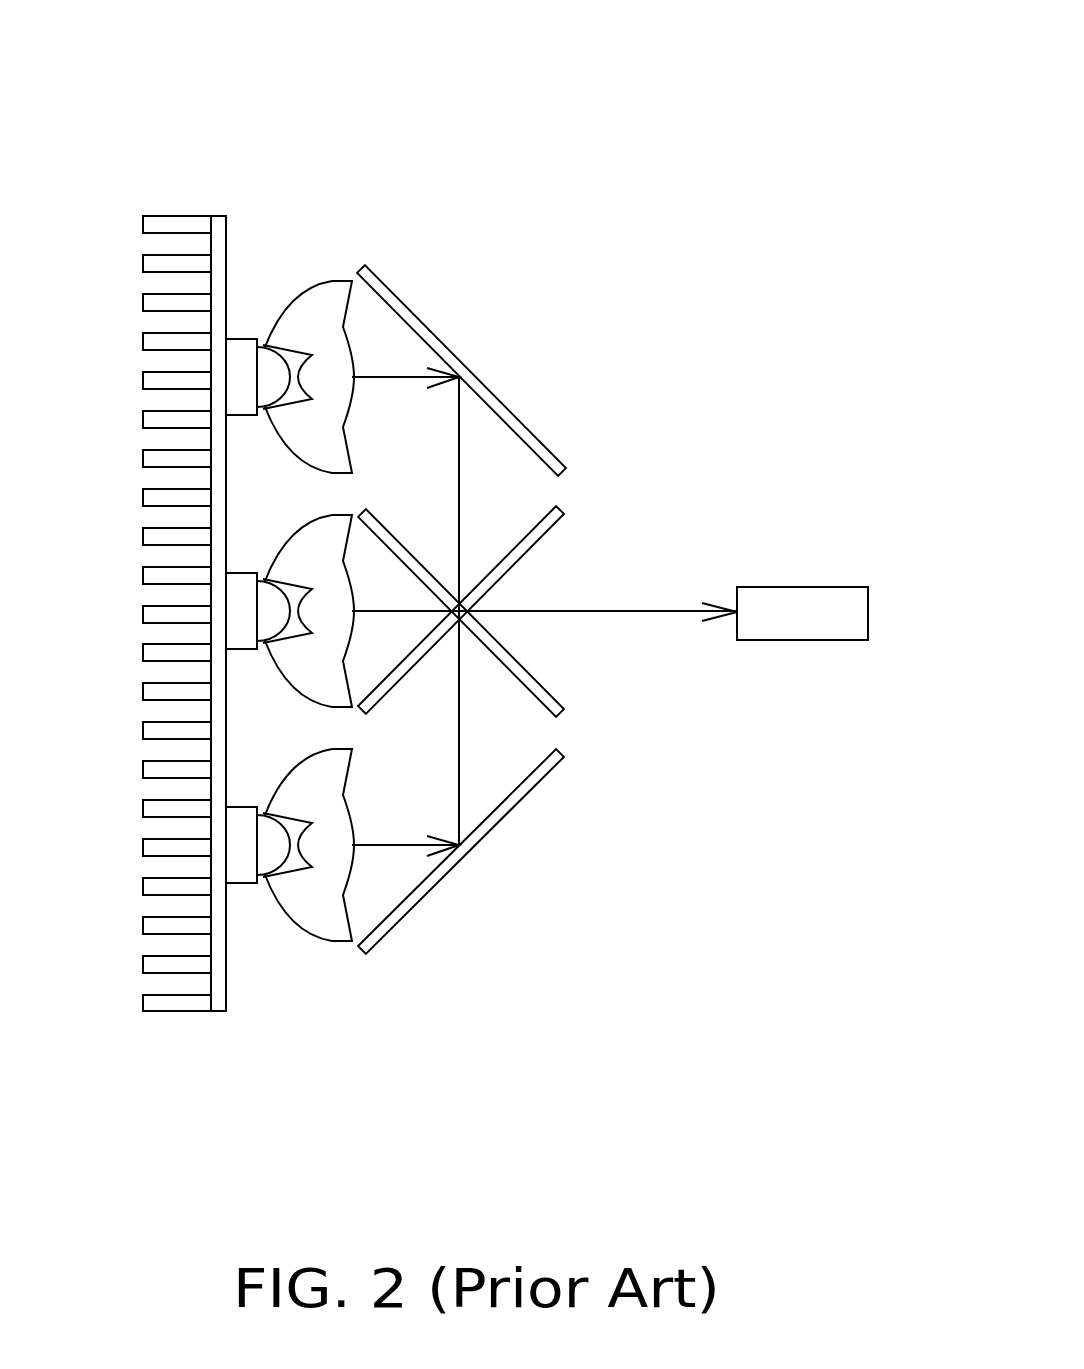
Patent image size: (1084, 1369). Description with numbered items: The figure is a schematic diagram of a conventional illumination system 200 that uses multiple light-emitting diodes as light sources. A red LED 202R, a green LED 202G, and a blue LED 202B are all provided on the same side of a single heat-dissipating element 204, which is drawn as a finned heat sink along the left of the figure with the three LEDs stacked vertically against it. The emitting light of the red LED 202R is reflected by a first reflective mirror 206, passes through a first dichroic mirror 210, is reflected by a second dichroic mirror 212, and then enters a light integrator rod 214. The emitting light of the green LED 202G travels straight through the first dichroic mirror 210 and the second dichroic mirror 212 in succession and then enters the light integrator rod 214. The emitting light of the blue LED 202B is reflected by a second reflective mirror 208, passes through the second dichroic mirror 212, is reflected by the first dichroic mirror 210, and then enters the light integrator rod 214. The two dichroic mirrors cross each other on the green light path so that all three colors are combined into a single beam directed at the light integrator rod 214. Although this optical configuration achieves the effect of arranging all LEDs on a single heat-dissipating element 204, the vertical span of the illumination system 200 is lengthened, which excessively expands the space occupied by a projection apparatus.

The illumination system 200 is at (834, 118).
The red LED 202R is at (243, 339).
The green LED 202G is at (242, 573).
The blue LED 202B is at (243, 887).
The heat-dissipating element 204 is at (177, 215).
The first reflective mirror 206 is at (467, 365).
The second reflective mirror 208 is at (467, 857).
The first dichroic mirror 210 is at (560, 508).
The second dichroic mirror 212 is at (562, 712).
The light integrator rod 214 is at (802, 640).